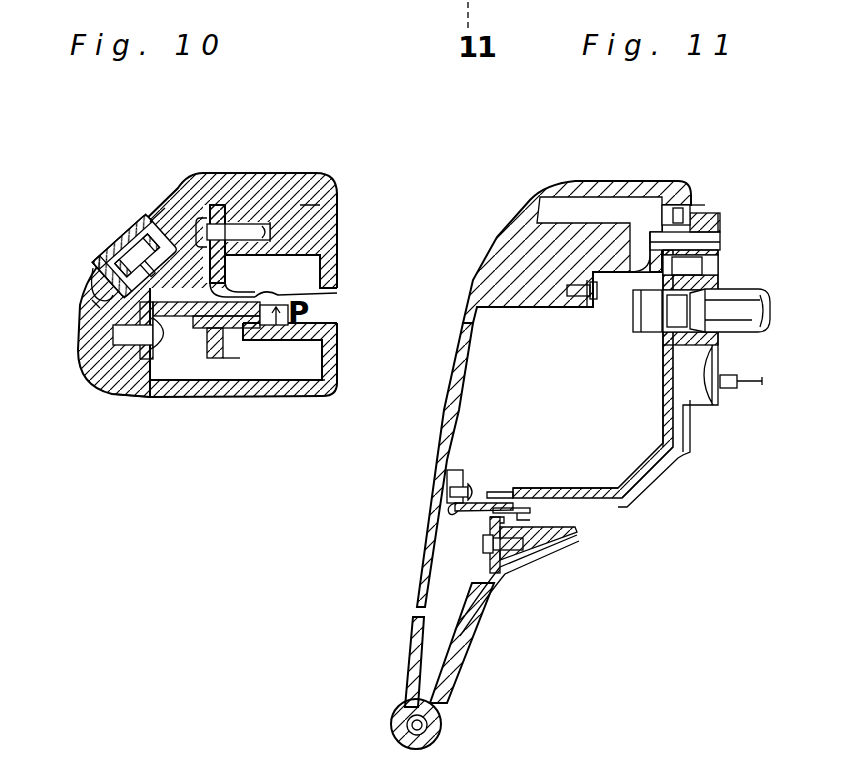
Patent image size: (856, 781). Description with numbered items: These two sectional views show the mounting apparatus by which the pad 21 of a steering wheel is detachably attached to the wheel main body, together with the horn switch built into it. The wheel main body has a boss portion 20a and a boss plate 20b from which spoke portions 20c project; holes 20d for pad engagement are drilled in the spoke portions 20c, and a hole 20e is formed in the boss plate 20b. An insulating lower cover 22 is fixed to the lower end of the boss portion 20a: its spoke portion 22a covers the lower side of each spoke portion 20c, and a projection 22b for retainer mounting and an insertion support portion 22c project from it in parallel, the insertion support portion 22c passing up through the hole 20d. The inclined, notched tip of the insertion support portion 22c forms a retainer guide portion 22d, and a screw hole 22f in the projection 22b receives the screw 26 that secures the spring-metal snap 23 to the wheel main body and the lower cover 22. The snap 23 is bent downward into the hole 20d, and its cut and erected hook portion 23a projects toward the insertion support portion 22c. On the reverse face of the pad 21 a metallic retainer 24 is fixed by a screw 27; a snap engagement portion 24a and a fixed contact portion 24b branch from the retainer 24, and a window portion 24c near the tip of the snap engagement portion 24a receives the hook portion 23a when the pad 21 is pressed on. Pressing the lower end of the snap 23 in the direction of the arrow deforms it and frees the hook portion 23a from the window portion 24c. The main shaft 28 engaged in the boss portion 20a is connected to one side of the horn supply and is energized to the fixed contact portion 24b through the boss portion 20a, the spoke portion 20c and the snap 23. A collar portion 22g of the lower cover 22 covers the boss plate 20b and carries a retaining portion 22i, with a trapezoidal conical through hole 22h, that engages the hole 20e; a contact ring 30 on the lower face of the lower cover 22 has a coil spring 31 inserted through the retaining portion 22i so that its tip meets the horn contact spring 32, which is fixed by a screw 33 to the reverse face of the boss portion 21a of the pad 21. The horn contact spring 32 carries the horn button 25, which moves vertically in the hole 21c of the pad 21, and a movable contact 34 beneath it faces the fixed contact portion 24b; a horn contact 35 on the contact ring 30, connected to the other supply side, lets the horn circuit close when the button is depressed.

In FIG. 11, the boss portion 20a is at (673, 335).
In FIG. 11, the boss plate 20b is at (663, 387).
In FIG. 10, the spoke portion 20c is at (213, 360).
In FIG. 11, the spoke portion 20c is at (545, 550).
In FIG. 10, the hole for pad engagement 20d is at (197, 386).
In FIG. 11, the hole 20e is at (680, 200).
In FIG. 10, the pad 21 is at (243, 174).
In FIG. 11, the pad 21 is at (543, 190).
In FIG. 11, the boss portion of the pad 21a is at (553, 305).
In FIG. 10, the hole 21c is at (97, 267).
In FIG. 10, the lower cover 22 is at (307, 392).
In FIG. 11, the lower cover 22 is at (690, 430).
In FIG. 11, the spoke portion of the lower cover 22a is at (627, 493).
In FIG. 10, the projection for retainer mounting 22b is at (327, 197).
In FIG. 11, the projection for retainer mounting 22b is at (533, 513).
In FIG. 10, the insertion support portion 22c is at (258, 335).
In FIG. 11, the insertion support portion 22c is at (523, 487).
In FIG. 10, the retainer guide portion 22d is at (140, 420).
In FIG. 10, the screw hole 22f is at (250, 222).
In FIG. 11, the collar portion 22g is at (707, 405).
In FIG. 11, the trapezoidal conical through hole 22h is at (720, 242).
In FIG. 11, the retaining portion 22i is at (650, 197).
In FIG. 10, the snap 23 is at (230, 260).
In FIG. 11, the snap 23 is at (490, 520).
In FIG. 10, the hook portion 23a is at (293, 296).
In FIG. 11, the hook portion 23a is at (495, 505).
In FIG. 10, the retainer 24 is at (128, 360).
In FIG. 11, the retainer 24 is at (462, 477).
In FIG. 10, the snap engagement portion 24a is at (187, 330).
In FIG. 11, the snap engagement portion 24a is at (447, 507).
In FIG. 10, the fixed contact portion 24b is at (176, 240).
In FIG. 10, the window portion 24c is at (232, 372).
In FIG. 10, the horn button 25 is at (130, 220).
In FIG. 10, the screw 26 is at (270, 231).
In FIG. 11, the screw 26 is at (523, 550).
In FIG. 10, the screw 27 is at (117, 333).
In FIG. 11, the screw 27 is at (447, 490).
In FIG. 11, the main shaft 28 is at (745, 293).
In FIG. 11, the contact ring 30 is at (720, 225).
In FIG. 11, the coil spring 31 is at (705, 205).
In FIG. 10, the horn contact spring 32 is at (150, 222).
In FIG. 11, the horn contact spring 32 is at (543, 205).
In FIG. 11, the screw 33 is at (567, 288).
In FIG. 10, the movable contact 34 is at (92, 302).
In FIG. 11, the horn contact 35 is at (737, 385).